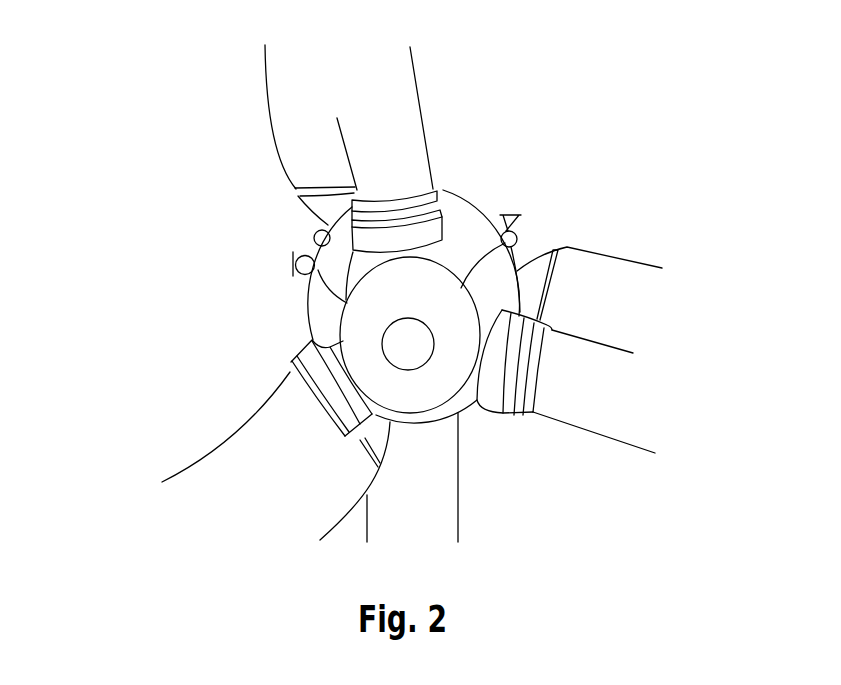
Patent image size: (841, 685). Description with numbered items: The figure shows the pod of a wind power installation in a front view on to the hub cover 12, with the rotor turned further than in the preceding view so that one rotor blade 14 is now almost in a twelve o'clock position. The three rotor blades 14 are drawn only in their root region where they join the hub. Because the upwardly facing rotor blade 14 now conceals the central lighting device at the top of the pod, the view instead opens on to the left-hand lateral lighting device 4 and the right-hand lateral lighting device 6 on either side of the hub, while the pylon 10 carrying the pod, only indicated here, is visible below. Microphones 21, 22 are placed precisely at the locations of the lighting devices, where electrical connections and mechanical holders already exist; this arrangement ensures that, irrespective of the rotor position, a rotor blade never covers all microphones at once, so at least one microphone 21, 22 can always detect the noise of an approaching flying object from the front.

The pylon 10 is at (440, 505).
The hub cover 12 is at (443, 388).
The rotor blades 14 is at (400, 100).
The left-hand lateral lighting device 4 is at (298, 229).
The right-hand lateral lighting device 6 is at (533, 226).
The microphone 21 is at (285, 270).
The microphone 22 is at (507, 211).